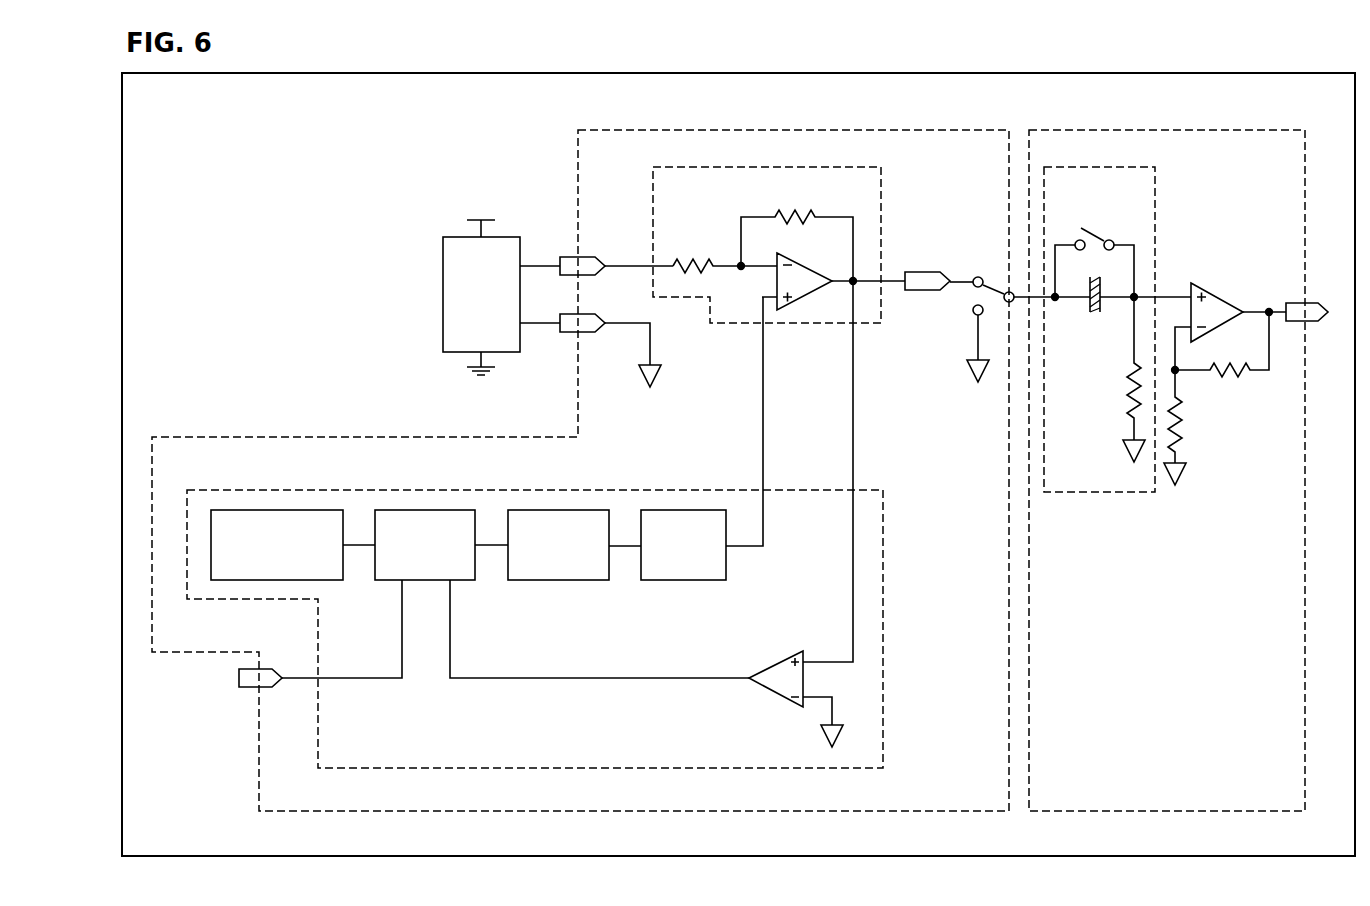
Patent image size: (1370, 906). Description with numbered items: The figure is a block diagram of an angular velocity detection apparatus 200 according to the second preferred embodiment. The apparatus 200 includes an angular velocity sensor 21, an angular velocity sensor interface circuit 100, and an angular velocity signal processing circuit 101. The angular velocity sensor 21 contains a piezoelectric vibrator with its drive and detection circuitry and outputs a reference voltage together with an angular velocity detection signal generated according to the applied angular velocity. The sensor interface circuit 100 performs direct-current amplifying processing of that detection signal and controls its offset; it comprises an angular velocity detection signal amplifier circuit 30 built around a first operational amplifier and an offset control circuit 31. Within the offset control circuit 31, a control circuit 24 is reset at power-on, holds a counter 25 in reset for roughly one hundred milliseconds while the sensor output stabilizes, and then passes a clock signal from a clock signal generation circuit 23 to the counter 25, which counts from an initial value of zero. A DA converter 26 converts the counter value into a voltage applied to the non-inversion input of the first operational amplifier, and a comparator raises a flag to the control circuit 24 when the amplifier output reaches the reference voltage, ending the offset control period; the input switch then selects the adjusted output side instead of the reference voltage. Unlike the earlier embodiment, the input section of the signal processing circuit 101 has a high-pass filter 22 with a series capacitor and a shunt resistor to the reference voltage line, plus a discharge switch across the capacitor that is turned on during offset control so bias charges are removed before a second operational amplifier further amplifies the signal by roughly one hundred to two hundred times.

The angular velocity detection apparatus 200 is at (1185, 73).
The angular velocity sensor interface circuit 100 is at (908, 130).
The angular velocity signal processing circuit 101 is at (1240, 130).
The angular velocity sensor 21 is at (521, 237).
The high-pass filter 22 is at (1155, 187).
The clock signal generation circuit 23 is at (275, 510).
The control circuit 24 is at (425, 510).
The counter 25 is at (557, 510).
The DA converter 26 is at (684, 510).
The angular velocity detection signal amplifier circuit 30 is at (882, 185).
The offset control circuit 31 is at (566, 608).